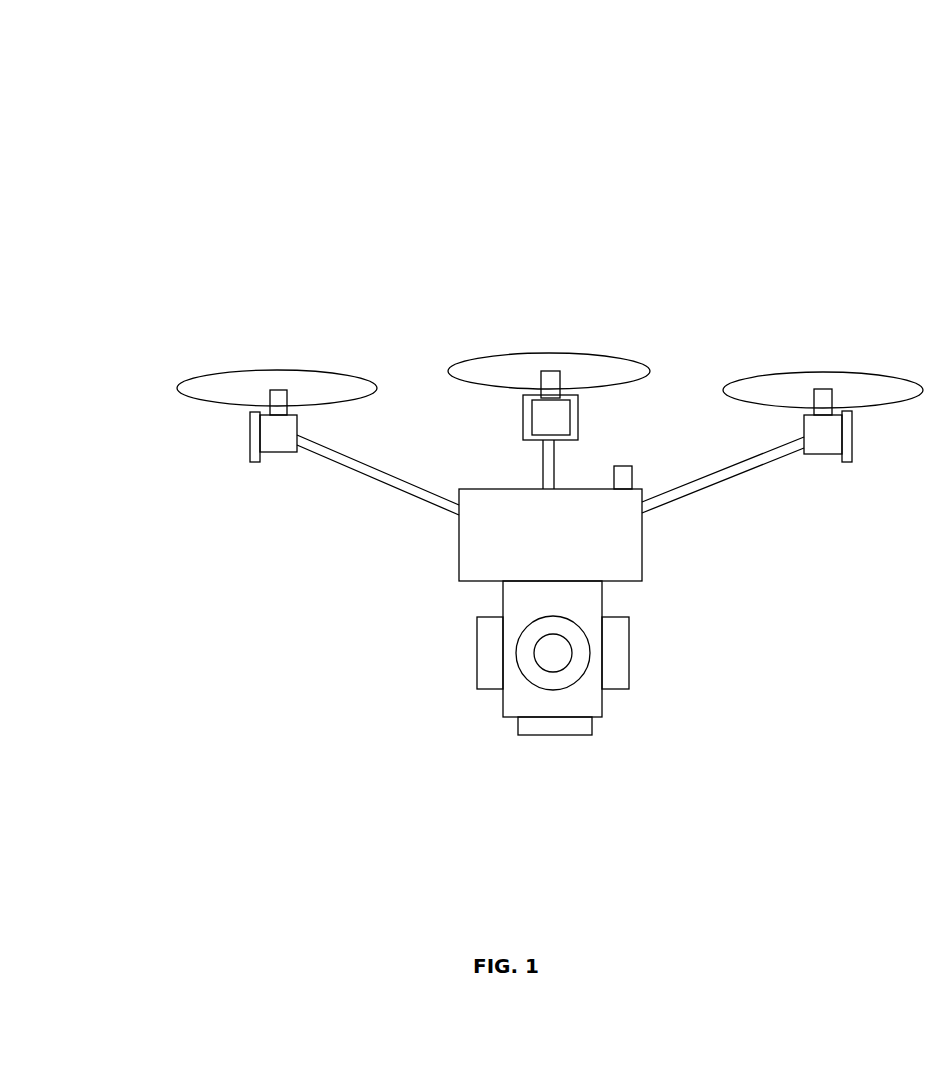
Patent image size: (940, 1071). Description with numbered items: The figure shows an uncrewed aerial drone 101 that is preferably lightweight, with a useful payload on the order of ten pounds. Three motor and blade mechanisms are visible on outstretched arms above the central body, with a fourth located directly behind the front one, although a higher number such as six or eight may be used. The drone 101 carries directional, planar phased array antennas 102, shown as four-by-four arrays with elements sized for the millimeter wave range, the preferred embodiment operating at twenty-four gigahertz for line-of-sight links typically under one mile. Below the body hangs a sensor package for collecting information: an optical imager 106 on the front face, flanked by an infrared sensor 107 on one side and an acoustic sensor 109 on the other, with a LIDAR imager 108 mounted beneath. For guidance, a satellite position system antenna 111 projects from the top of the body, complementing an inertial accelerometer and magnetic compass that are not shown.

The drone 101 is at (268, 134).
The directional planar phased array antennas 102 is at (250, 440).
The optical imager 106 is at (567, 618).
The infrared sensor 107 is at (473, 663).
The LIDAR imager 108 is at (588, 735).
The acoustic sensor 109 is at (629, 658).
The satellite position system antenna 111 is at (633, 480).